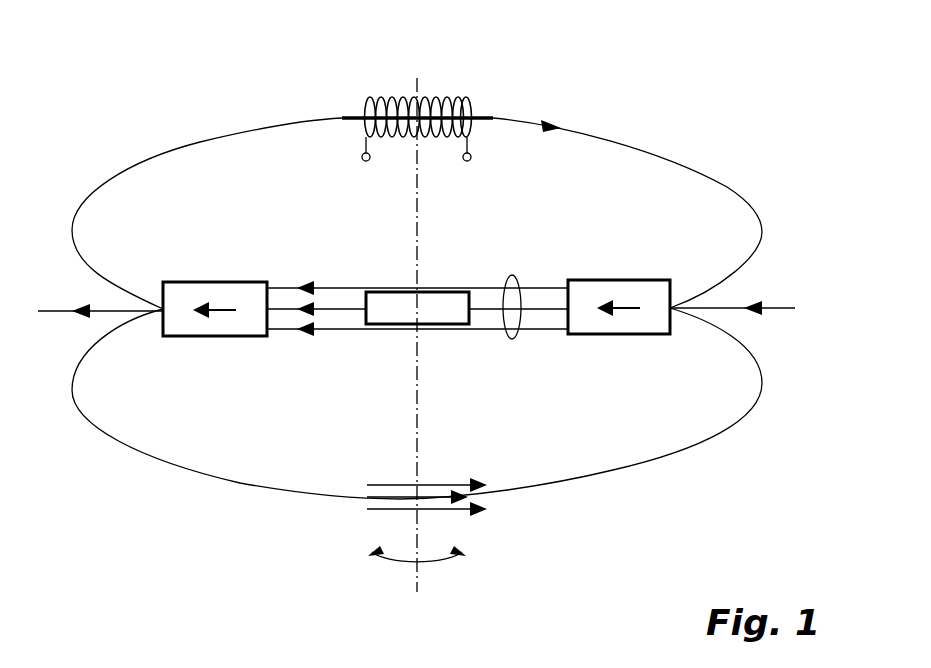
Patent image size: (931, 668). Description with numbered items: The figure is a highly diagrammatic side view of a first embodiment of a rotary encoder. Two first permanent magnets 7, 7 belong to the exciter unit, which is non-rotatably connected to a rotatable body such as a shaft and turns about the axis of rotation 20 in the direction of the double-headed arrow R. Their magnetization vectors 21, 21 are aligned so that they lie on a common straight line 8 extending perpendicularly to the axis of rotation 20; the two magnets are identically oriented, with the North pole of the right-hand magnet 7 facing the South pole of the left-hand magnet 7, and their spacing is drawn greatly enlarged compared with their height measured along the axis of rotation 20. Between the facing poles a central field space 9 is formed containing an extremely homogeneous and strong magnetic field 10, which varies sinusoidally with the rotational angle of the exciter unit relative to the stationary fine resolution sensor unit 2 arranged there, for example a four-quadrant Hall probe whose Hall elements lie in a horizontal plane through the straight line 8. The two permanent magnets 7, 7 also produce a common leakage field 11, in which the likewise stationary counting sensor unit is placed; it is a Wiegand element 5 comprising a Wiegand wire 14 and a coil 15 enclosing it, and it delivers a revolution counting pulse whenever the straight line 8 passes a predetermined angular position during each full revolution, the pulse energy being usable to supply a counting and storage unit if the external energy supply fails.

The fine resolution sensor unit 2 is at (432, 308).
The Wiegand element 5 is at (364, 76).
The first permanent magnets 7 is at (185, 337).
The common straight line 8 is at (765, 313).
The central field space 9 is at (345, 297).
The magnetic field 10 is at (515, 338).
The common leakage field 11 is at (593, 132).
The Wiegand wire 14 is at (350, 122).
The coil 15 is at (466, 99).
The axis of rotation 20 is at (420, 557).
The magnetization vectors 21 is at (215, 314).
The direction of rotation R is at (390, 573).